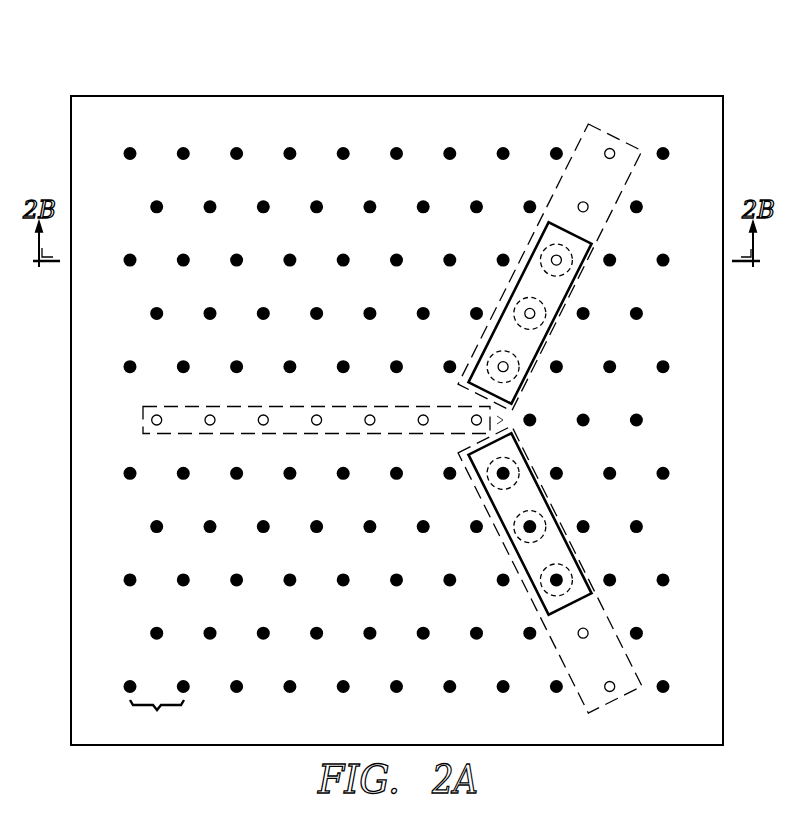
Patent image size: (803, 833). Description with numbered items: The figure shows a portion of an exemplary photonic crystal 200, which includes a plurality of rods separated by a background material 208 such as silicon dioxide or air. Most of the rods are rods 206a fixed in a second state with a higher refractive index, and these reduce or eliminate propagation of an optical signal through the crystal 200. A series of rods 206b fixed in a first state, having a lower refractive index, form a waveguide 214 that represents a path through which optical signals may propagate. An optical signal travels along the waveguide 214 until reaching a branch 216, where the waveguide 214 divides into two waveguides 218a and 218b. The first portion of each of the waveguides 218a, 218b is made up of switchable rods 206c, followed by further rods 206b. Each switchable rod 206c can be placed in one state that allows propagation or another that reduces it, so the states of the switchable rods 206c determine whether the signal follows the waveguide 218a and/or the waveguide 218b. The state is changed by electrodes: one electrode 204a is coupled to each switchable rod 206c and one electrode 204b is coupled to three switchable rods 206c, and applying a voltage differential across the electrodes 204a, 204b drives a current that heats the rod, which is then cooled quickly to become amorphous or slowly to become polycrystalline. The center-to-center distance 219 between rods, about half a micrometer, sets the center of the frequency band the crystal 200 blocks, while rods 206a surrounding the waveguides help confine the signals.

The photonic crystal 200 is at (277, 81).
The background material 208 is at (409, 177).
The rod fixed in the second state 206a is at (392, 255).
The rod fixed in the first state 206b is at (150, 419).
The switchable rod 206c is at (561, 266).
The electrode 204a is at (546, 315).
The electrode 204b is at (528, 258).
The waveguide 214 is at (171, 406).
The branch 216 is at (500, 420).
The waveguide 218a is at (634, 179).
The waveguide 218b is at (634, 658).
The center-to-center distance 219 is at (157, 720).